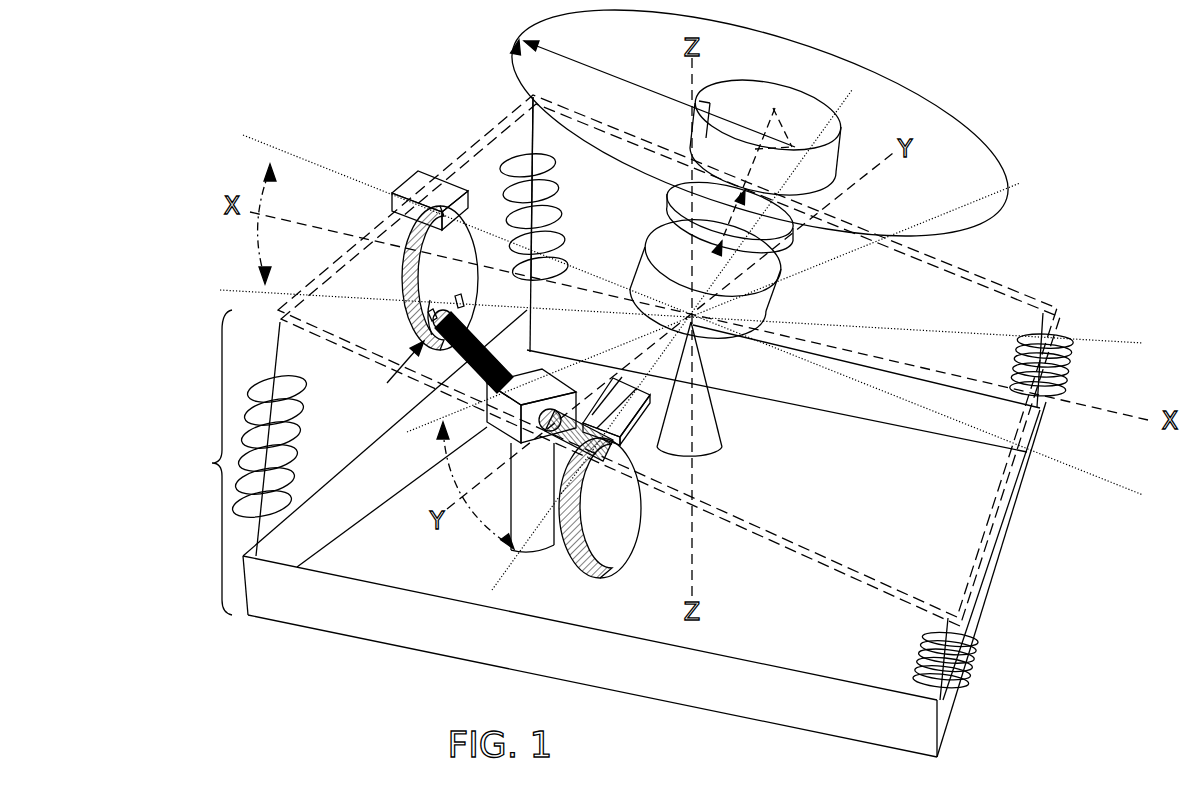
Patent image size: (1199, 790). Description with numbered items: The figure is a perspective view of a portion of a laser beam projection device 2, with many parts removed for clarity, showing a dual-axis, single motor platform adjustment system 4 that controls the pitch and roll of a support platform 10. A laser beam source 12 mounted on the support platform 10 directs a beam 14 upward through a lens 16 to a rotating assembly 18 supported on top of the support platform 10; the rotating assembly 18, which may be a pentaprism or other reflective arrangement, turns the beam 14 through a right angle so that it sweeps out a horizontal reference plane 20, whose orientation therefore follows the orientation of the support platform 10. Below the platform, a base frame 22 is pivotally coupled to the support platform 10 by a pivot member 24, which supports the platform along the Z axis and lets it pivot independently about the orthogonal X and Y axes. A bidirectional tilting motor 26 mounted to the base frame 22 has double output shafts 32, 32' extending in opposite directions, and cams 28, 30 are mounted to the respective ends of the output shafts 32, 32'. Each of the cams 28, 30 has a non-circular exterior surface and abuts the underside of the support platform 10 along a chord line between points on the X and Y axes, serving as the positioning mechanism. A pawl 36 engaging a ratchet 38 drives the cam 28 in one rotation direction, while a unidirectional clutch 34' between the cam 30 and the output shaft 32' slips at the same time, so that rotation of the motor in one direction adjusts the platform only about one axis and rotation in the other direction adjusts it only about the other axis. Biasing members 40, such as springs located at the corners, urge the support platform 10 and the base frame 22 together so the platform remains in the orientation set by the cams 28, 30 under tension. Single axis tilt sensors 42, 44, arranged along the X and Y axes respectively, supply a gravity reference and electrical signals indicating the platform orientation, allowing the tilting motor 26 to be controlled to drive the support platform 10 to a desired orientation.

The laser beam projection device 2 is at (252, 84).
The platform adjustment system 4 is at (207, 462).
The support platform 10 is at (483, 134).
The laser beam source 12 is at (775, 300).
The beam 14 is at (628, 80).
The lens 16 is at (690, 203).
The rotating assembly 18 is at (842, 133).
The reference plane 20 is at (903, 91).
The base frame 22 is at (776, 652).
The pivot member 24 is at (726, 436).
The tilting motor 26 is at (504, 420).
The cam 28 is at (622, 557).
The cam 30 is at (404, 312).
The output shaft 32 is at (529, 488).
The output shaft 32' is at (510, 351).
The unidirectional clutch 34' is at (385, 379).
The pawl 36 is at (461, 303).
The ratchet 38 is at (443, 303).
The biasing members 40 is at (562, 216).
The tilt sensor 42 is at (408, 182).
The tilt sensor 44 is at (632, 425).